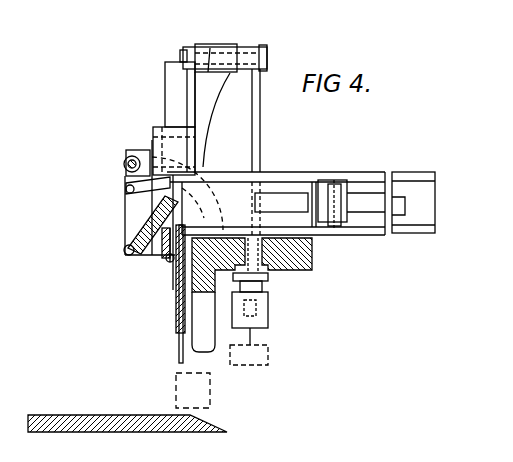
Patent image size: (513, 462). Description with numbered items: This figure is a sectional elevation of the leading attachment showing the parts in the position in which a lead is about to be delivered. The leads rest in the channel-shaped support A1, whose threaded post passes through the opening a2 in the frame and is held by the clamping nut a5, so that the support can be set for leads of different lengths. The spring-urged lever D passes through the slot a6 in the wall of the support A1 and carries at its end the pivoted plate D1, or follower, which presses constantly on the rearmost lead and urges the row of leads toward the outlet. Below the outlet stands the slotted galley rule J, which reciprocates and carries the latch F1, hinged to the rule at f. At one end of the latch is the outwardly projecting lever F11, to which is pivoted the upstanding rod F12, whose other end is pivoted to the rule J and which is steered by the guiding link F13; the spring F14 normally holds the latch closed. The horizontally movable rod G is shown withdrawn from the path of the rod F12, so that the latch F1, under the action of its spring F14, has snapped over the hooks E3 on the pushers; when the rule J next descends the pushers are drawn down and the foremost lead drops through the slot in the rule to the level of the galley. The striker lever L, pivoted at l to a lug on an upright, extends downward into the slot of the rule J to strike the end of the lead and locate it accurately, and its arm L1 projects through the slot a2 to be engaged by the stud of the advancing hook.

The pivot l is at (266, 56).
The arm L1 is at (260, 137).
The support A1 is at (430, 200).
The slot a6 is at (276, 203).
The lever D is at (345, 222).
The plate D1 is at (318, 226).
The opening a2 is at (305, 272).
The clamping nut a5 is at (268, 304).
The rod G is at (124, 162).
The rod F12 is at (124, 221).
The guiding link F13 is at (127, 190).
The spring F14 is at (163, 236).
The lever F11 is at (162, 256).
The latch F1 is at (170, 265).
The hinge f is at (166, 277).
The hook E3 is at (144, 294).
The galley rule J is at (176, 305).
The lever L is at (178, 357).